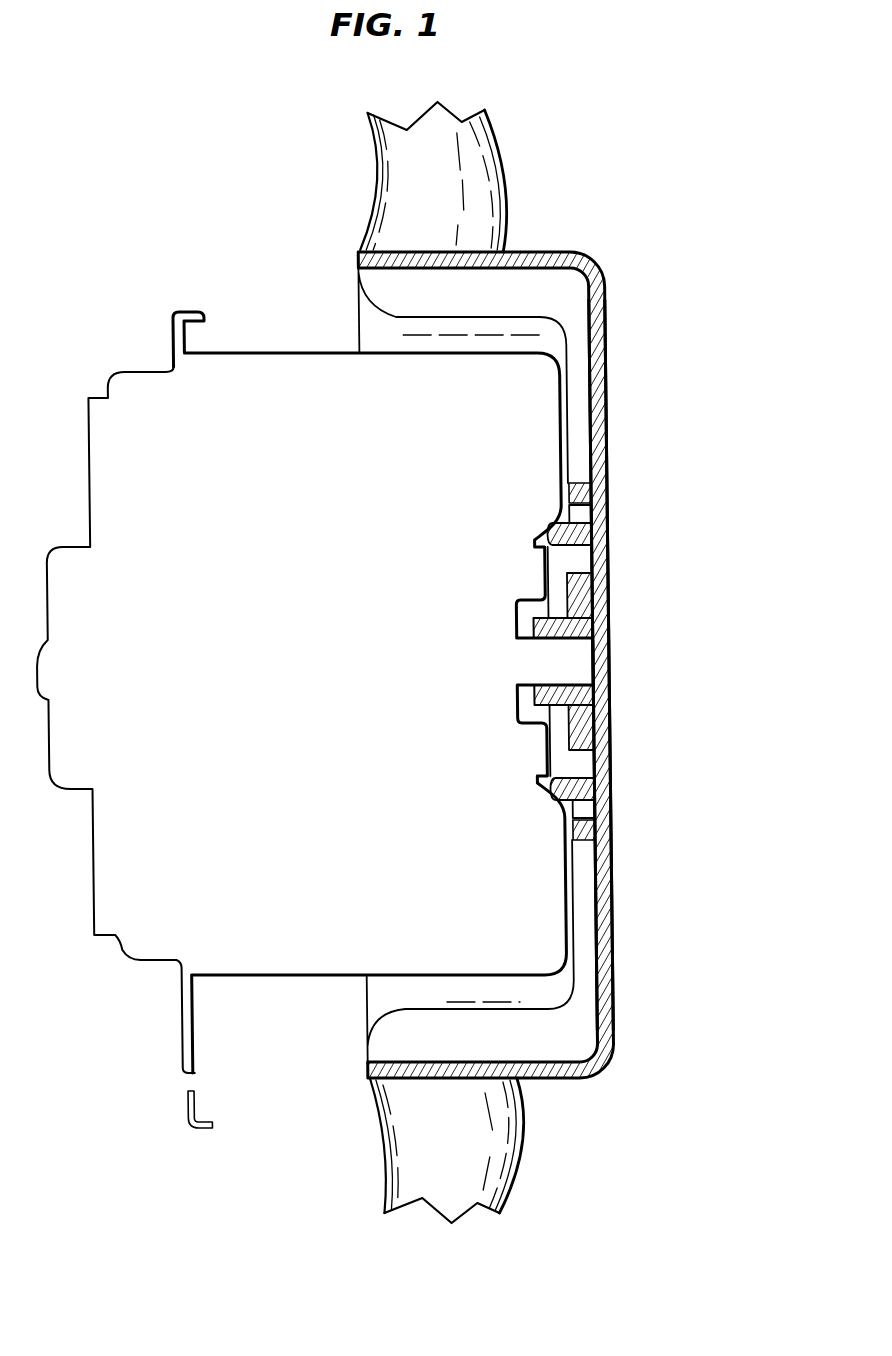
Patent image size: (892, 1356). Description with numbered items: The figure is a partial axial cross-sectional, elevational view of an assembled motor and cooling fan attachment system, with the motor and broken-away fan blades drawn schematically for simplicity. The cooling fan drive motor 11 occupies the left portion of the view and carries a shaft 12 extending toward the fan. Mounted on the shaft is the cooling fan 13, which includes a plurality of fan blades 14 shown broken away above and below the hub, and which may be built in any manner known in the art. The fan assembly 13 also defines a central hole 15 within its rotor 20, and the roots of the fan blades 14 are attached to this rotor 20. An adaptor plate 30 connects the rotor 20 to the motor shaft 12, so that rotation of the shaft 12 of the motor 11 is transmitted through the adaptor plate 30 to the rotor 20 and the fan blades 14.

The cooling fan drive motor 11 is at (237, 628).
The shaft 12 is at (594, 662).
The cooling fan 13 is at (548, 643).
The fan blades 14 is at (496, 157).
The central hole 15 is at (586, 598).
The rotor 20 is at (608, 437).
The adaptor plate 30 is at (619, 633).